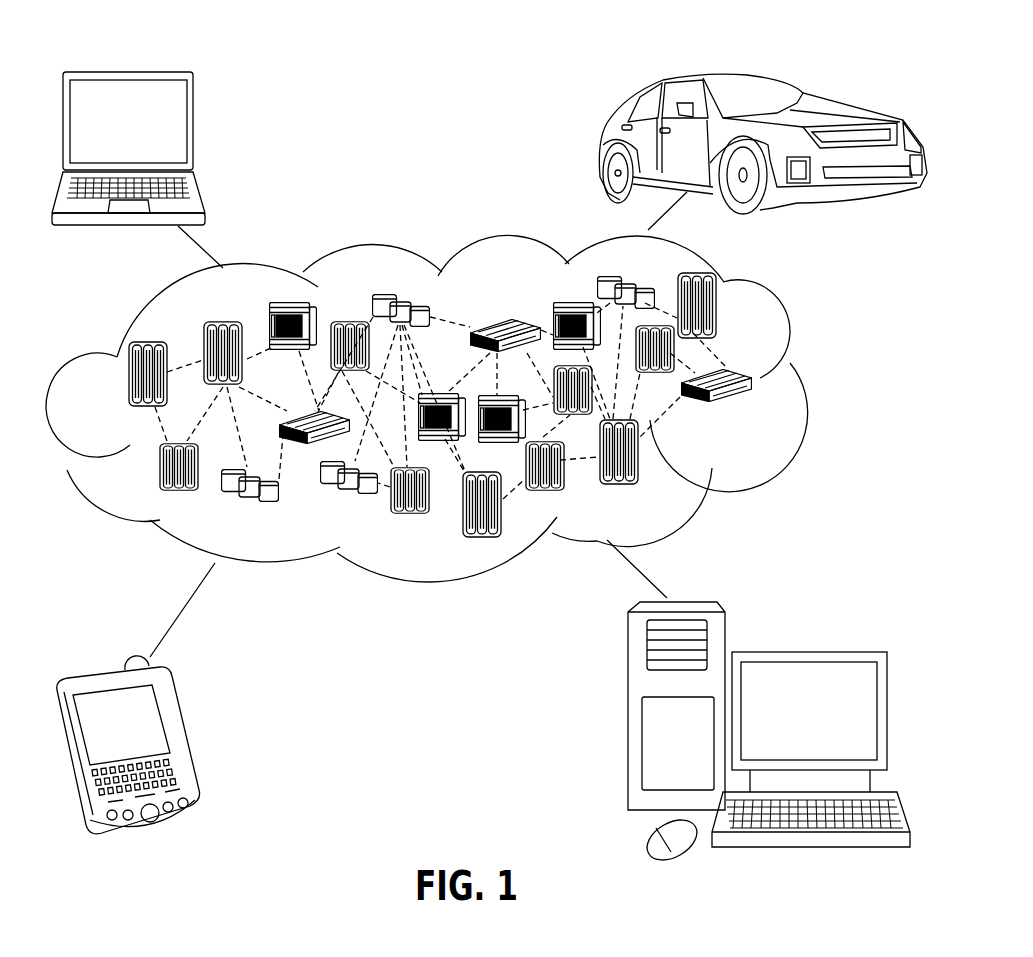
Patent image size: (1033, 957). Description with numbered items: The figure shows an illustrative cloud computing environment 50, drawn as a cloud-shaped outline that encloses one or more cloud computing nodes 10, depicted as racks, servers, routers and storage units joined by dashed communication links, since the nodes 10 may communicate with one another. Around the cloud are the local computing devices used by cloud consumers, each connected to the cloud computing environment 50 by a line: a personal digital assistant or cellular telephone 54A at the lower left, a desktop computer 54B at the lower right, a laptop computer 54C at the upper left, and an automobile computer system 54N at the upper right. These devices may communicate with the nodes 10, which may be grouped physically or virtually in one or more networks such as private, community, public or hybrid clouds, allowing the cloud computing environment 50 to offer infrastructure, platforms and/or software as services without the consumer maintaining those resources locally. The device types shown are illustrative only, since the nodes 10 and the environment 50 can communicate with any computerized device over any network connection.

The cloud computing nodes 10 is at (454, 424).
The cloud computing environment 50 is at (807, 387).
The personal digital assistant or cellular telephone 54A is at (183, 738).
The desktop computer 54B is at (806, 652).
The laptop computer 54C is at (195, 128).
The automobile computer system 54N is at (600, 143).